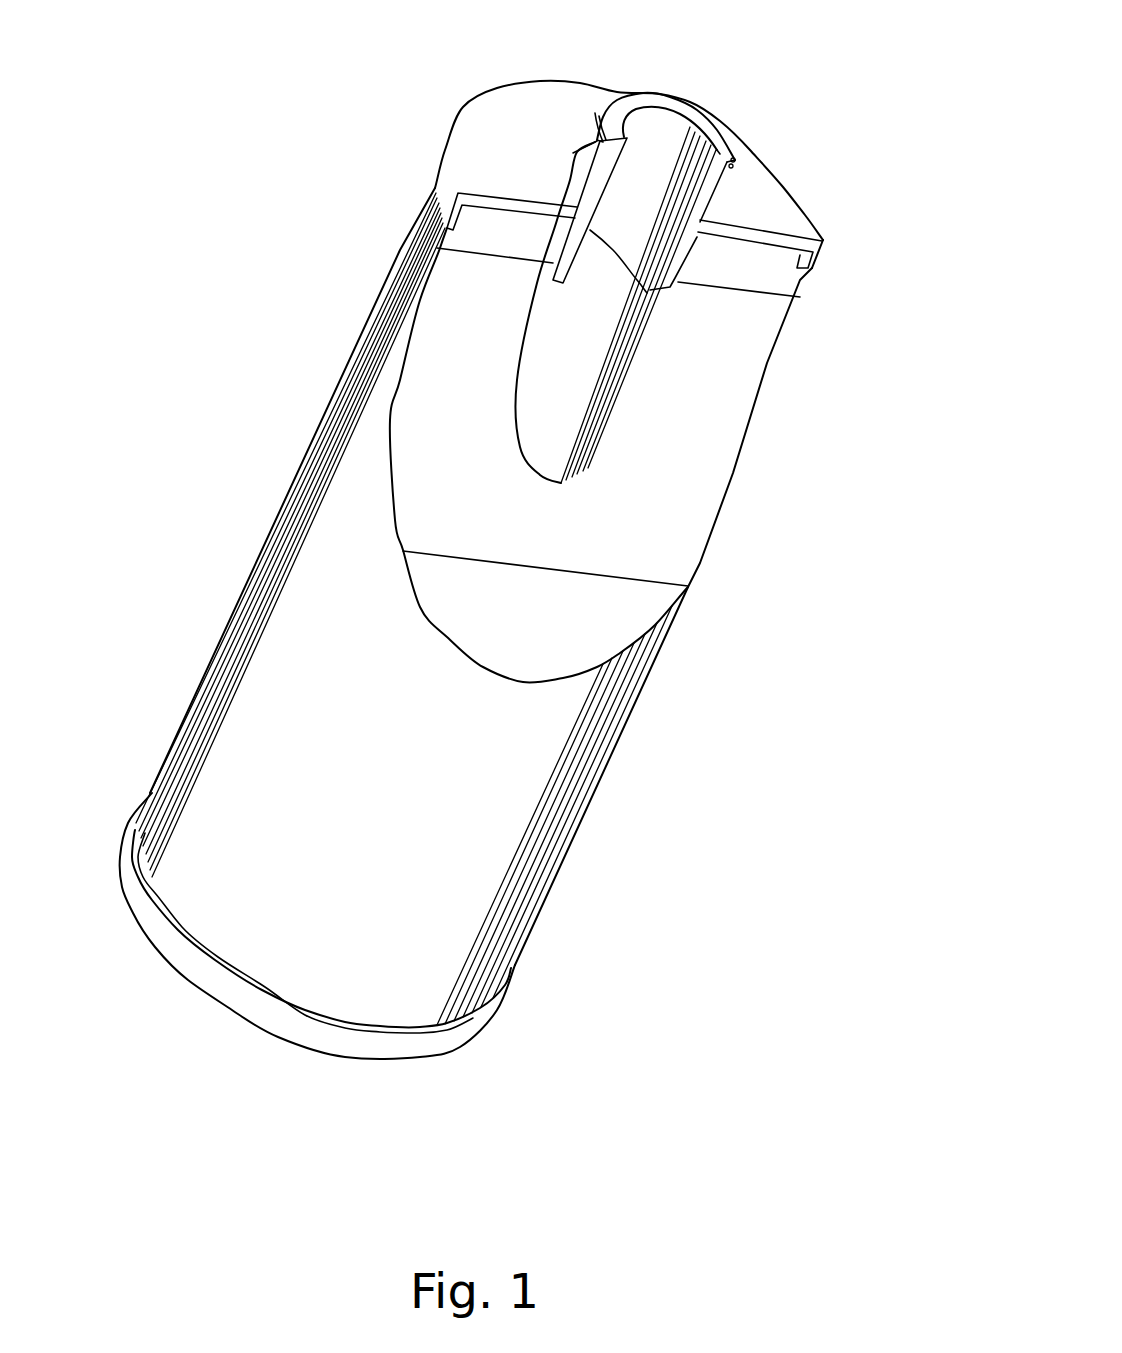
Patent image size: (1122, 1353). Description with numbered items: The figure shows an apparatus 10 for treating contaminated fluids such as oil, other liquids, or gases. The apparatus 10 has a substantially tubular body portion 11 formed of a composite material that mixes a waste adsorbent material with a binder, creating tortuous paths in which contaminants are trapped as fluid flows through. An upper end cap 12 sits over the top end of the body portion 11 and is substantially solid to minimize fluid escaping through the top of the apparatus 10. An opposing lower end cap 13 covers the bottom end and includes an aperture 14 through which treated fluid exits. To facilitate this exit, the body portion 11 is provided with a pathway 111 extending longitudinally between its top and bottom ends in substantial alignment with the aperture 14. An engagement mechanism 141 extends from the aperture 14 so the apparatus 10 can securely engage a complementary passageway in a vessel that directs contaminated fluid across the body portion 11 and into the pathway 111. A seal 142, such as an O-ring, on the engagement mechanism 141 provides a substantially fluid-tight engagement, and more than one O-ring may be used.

The apparatus 10 is at (245, 125).
The tubular body portion 11 is at (607, 763).
The pathway 111 is at (548, 400).
The upper end cap 12 is at (460, 1047).
The lower end cap 13 is at (810, 215).
The aperture 14 is at (588, 230).
The engagement mechanism 141 is at (713, 122).
The seal 142 is at (598, 133).